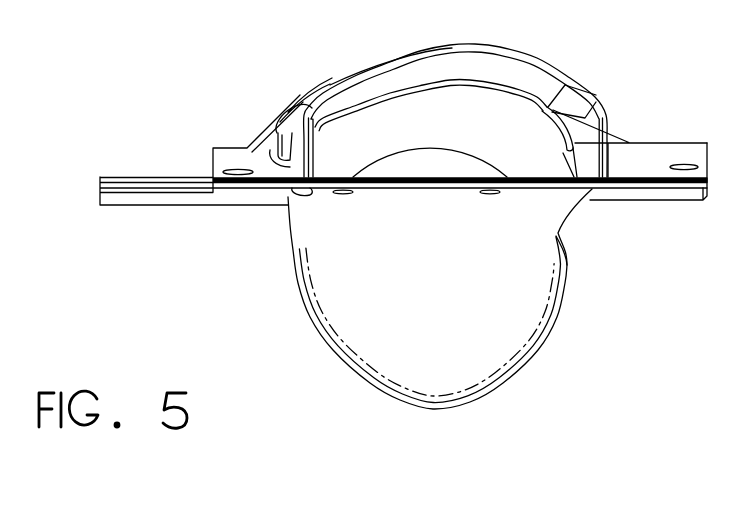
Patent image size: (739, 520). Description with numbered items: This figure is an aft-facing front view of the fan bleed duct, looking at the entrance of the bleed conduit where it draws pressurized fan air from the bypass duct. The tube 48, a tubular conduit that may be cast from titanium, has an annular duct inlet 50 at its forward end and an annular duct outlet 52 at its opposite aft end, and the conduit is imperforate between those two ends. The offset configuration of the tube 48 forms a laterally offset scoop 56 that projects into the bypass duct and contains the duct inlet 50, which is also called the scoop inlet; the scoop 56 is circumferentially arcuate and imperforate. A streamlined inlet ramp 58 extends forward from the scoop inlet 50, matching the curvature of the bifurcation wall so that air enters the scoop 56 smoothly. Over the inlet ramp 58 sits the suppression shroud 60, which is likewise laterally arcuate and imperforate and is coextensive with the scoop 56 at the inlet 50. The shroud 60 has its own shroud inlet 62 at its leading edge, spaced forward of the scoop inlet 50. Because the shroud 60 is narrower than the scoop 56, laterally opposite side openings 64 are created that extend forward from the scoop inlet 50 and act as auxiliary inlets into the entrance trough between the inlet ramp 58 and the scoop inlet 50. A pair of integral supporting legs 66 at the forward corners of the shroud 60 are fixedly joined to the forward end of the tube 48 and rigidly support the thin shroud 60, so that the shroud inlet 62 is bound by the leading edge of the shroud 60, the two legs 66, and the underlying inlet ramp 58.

The tube 48 is at (440, 299).
The duct inlet 50 is at (356, 95).
The duct outlet 52 is at (550, 340).
The scoop 56 is at (423, 128).
The inlet ramp 58 is at (425, 181).
The shroud 60 is at (567, 67).
The shroud inlet 62 is at (458, 46).
The side openings 64 is at (273, 128).
The supporting legs 66 is at (290, 163).